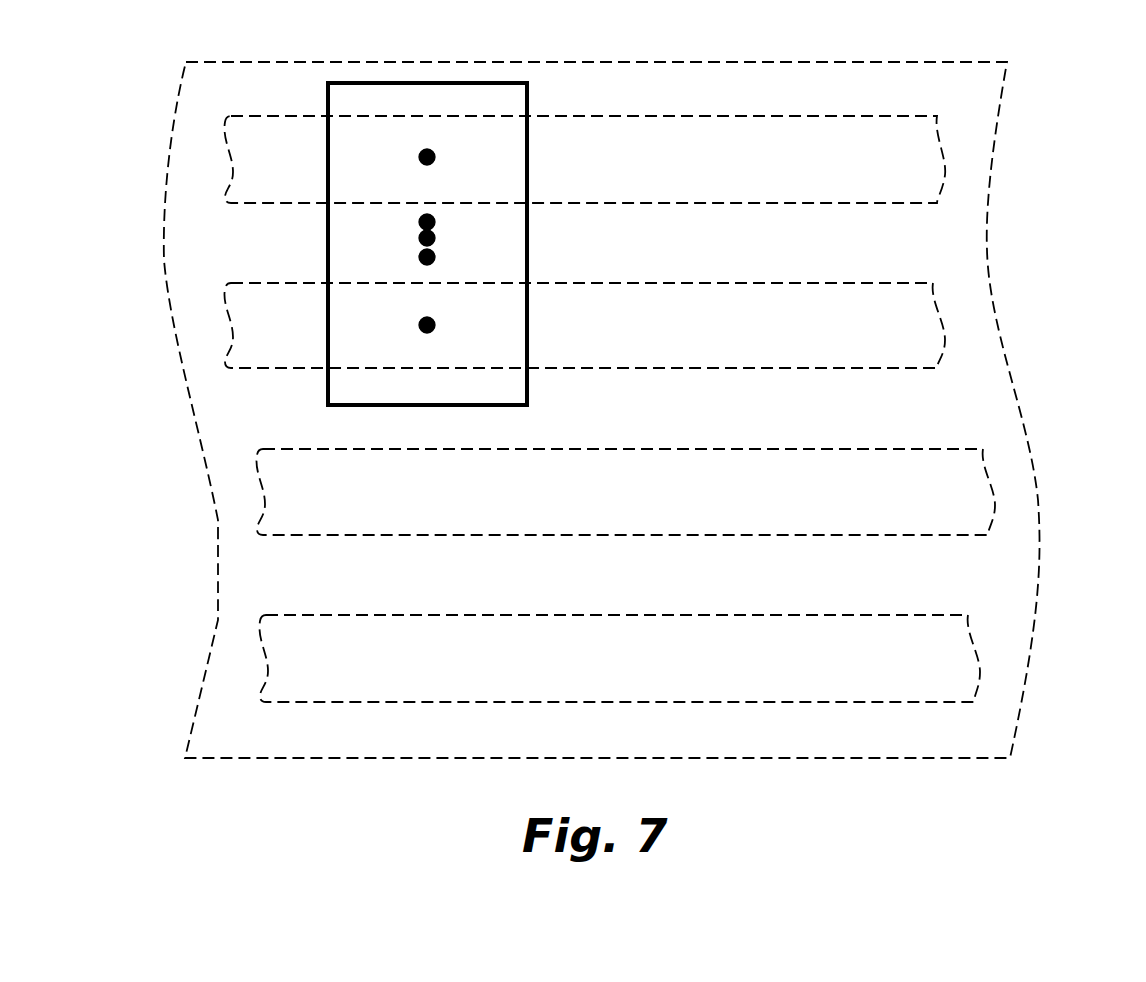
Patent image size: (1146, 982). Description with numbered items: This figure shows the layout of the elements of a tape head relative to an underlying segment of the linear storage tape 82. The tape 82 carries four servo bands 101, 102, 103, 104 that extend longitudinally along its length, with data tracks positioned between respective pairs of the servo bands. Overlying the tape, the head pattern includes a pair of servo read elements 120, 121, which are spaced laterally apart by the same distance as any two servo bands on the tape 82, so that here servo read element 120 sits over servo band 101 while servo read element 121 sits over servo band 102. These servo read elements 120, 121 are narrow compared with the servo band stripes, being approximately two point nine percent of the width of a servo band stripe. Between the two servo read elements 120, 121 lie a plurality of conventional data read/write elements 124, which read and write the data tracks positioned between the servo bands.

The linear storage tape 82 is at (880, 76).
The servo band 101 is at (930, 160).
The servo band 102 is at (933, 291).
The servo band 103 is at (980, 509).
The servo band 104 is at (963, 624).
The servo read element 120 is at (435, 155).
The servo read element 121 is at (435, 323).
The data read/write elements 124 is at (435, 224).